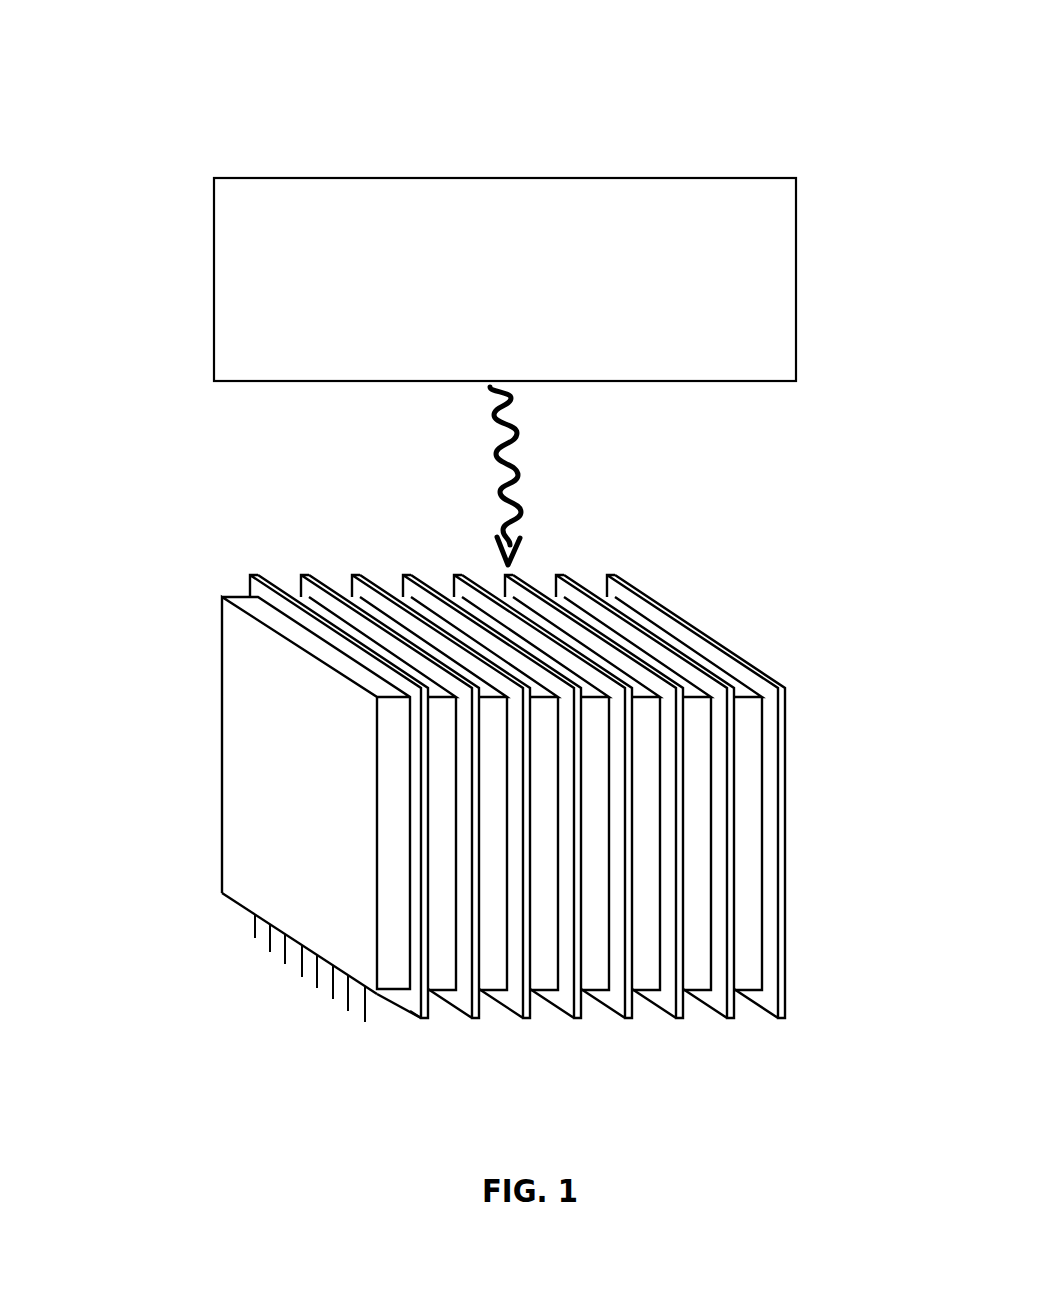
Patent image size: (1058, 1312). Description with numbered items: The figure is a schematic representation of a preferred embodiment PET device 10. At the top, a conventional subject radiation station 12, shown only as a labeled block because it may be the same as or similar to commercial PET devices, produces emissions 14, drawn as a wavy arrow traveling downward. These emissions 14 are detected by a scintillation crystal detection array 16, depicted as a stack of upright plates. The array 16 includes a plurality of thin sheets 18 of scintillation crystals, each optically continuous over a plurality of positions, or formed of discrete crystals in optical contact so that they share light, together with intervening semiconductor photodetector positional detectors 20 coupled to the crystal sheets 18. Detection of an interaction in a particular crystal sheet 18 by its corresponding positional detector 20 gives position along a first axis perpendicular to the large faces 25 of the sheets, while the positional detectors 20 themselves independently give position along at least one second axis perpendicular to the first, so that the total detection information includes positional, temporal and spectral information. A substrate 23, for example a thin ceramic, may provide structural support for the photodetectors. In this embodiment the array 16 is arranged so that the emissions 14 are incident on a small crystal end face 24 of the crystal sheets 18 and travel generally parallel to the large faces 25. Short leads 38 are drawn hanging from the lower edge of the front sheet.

The PET device 10 is at (265, 47).
The subject radiation station 12 is at (508, 177).
The emissions 14 is at (520, 487).
The scintillation crystal detection array 16 is at (710, 585).
The thin sheets of scintillation crystals 18 is at (222, 746).
The semiconductor photodetector positional detectors 20 is at (264, 597).
The substrate 23 is at (418, 1017).
The small crystal end face 24 is at (745, 688).
The large faces 25 is at (332, 894).
The electrical leads 38 is at (345, 1003).